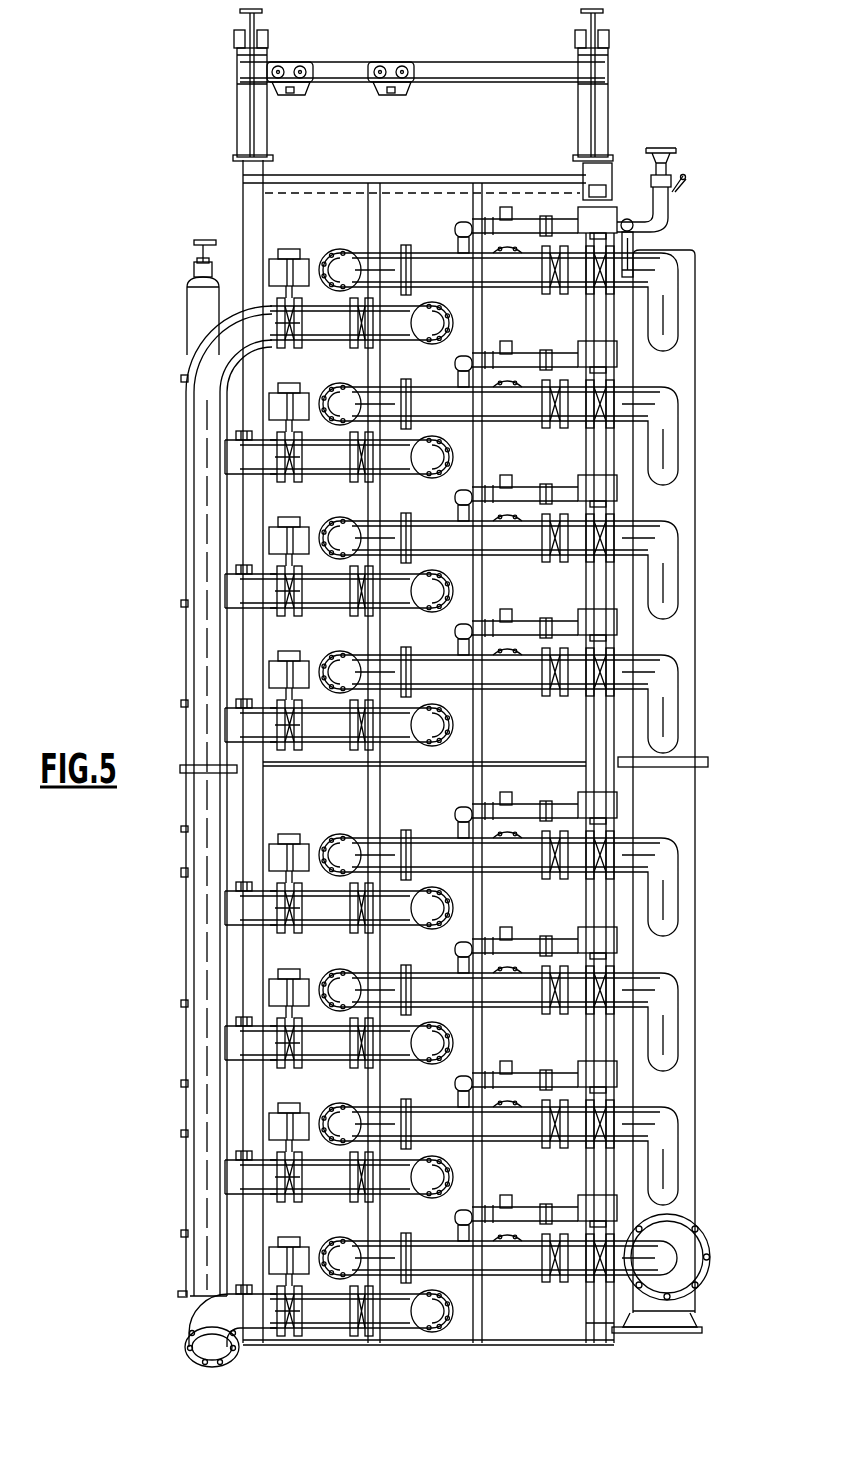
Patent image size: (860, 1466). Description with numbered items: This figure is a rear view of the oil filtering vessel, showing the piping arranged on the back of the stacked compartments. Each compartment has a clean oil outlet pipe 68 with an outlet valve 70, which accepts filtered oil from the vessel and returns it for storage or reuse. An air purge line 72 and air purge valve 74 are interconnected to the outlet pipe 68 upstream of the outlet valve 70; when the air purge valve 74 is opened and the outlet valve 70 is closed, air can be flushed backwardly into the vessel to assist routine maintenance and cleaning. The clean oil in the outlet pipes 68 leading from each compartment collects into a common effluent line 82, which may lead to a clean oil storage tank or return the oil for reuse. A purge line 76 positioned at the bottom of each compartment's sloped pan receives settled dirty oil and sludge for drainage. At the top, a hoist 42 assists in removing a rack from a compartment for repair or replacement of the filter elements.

The hoist 42 is at (441, 61).
The clean oil outlet pipe 68 is at (664, 403).
The outlet valve 70 is at (564, 428).
The air purge line 72 is at (561, 353).
The air purge valve 74 is at (514, 313).
The purge line 76 is at (210, 540).
The effluent line 82 is at (697, 640).